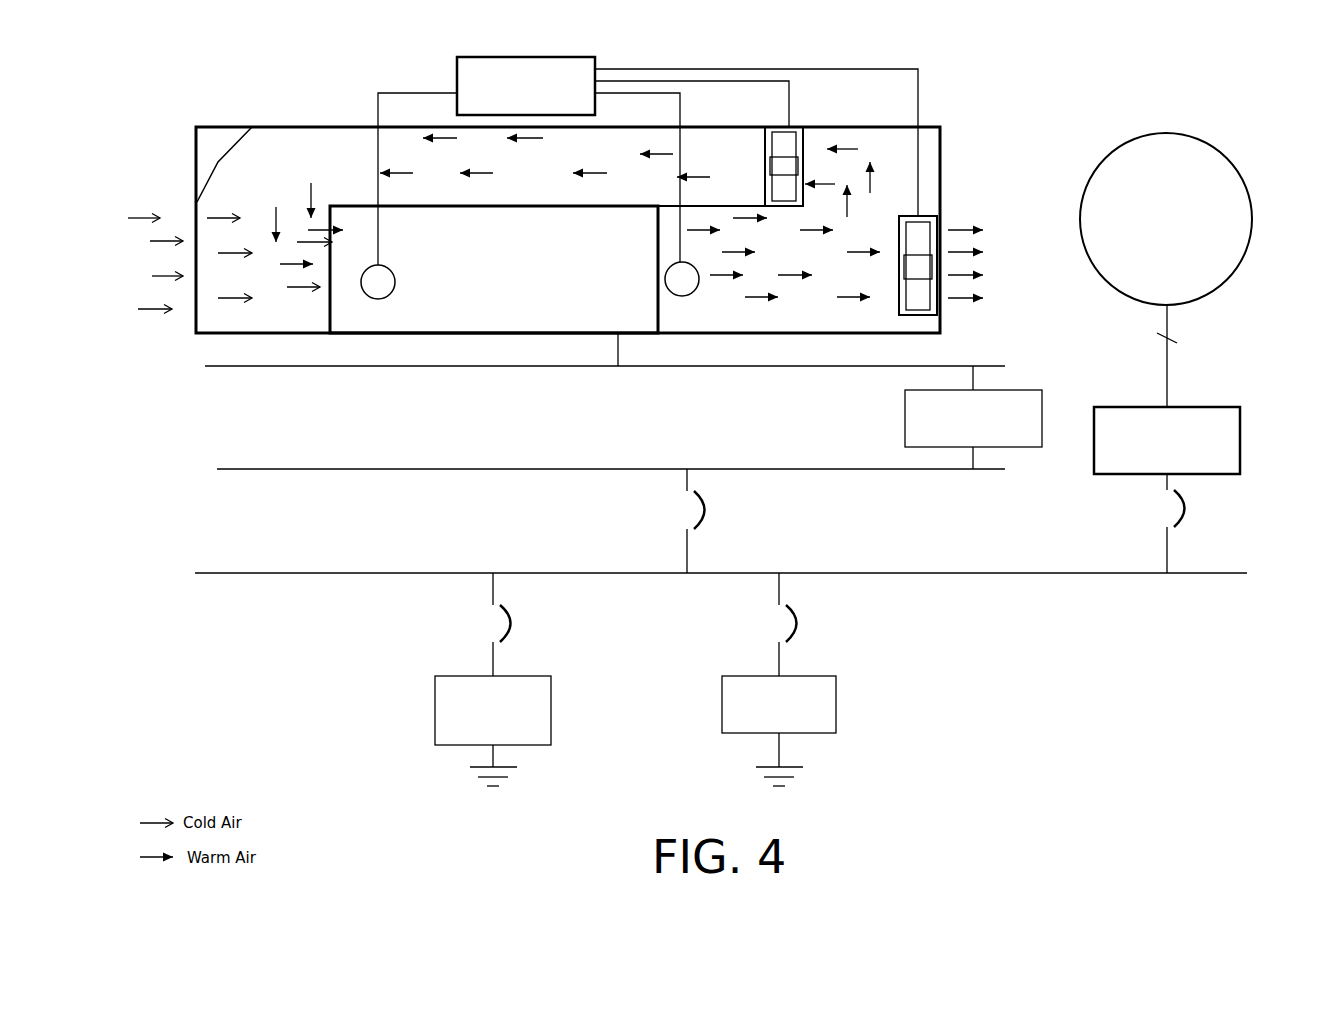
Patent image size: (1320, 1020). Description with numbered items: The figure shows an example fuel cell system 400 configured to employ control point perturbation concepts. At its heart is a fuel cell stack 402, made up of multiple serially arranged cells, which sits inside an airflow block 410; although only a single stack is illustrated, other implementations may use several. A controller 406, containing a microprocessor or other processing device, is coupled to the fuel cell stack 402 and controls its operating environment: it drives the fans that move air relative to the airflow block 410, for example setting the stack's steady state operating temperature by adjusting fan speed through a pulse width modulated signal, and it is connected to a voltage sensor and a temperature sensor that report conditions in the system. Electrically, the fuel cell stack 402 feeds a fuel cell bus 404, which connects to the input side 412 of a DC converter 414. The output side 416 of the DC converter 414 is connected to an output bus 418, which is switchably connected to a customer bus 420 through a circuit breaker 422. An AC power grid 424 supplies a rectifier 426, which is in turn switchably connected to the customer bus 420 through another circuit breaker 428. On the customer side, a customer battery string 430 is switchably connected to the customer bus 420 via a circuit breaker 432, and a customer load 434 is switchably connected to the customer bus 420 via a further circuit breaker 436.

The fuel cell system 400 is at (592, 13).
The fuel cell stack 402 is at (566, 269).
The fuel cell bus 404 is at (588, 363).
The controller 406 is at (648, 161).
The airflow block 410 is at (367, 125).
The input side 412 is at (973, 383).
The DC converter 414 is at (905, 425).
The output side 416 is at (973, 466).
The output bus 418 is at (490, 466).
The customer bus 420 is at (457, 570).
The circuit breaker 422 is at (755, 521).
The AC power grid 424 is at (1166, 270).
The rectifier 426 is at (1167, 440).
The circuit breaker 428 is at (1215, 523).
The customer battery string 430 is at (435, 712).
The circuit breaker 432 is at (544, 624).
The customer load 434 is at (722, 708).
The circuit breaker 436 is at (830, 624).